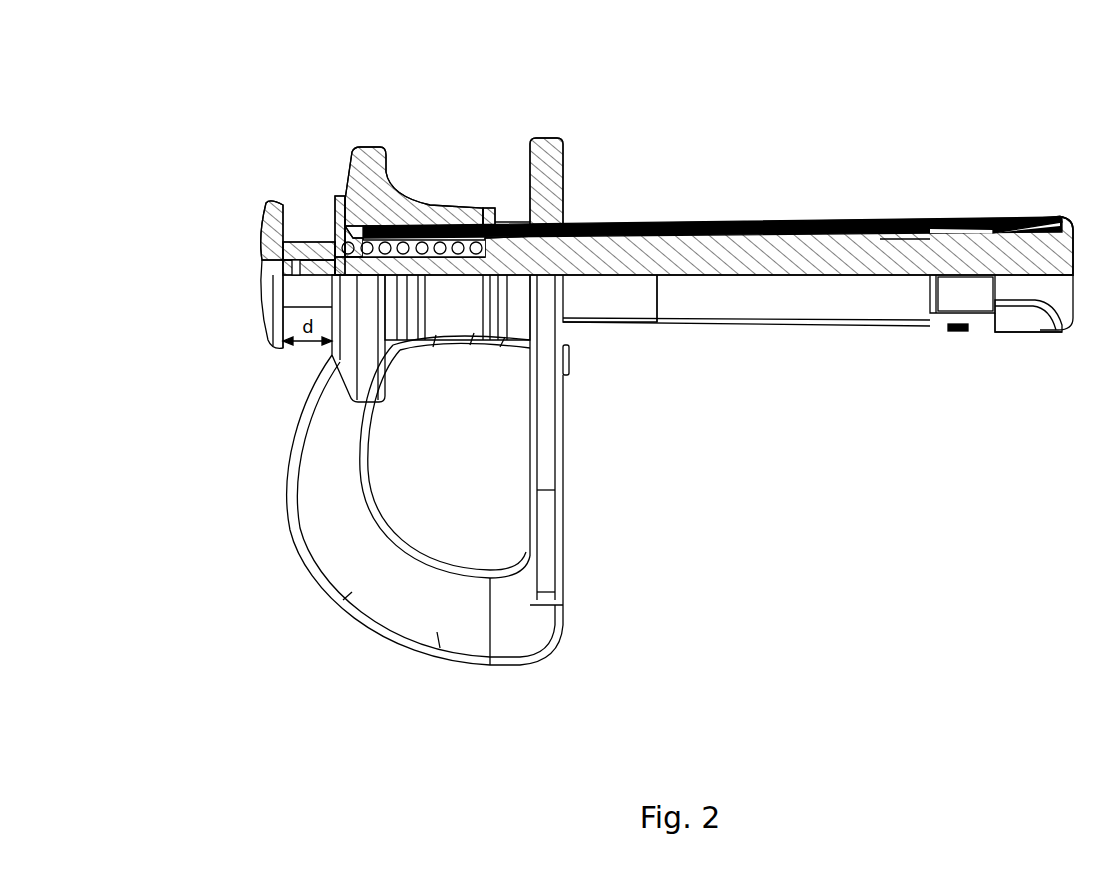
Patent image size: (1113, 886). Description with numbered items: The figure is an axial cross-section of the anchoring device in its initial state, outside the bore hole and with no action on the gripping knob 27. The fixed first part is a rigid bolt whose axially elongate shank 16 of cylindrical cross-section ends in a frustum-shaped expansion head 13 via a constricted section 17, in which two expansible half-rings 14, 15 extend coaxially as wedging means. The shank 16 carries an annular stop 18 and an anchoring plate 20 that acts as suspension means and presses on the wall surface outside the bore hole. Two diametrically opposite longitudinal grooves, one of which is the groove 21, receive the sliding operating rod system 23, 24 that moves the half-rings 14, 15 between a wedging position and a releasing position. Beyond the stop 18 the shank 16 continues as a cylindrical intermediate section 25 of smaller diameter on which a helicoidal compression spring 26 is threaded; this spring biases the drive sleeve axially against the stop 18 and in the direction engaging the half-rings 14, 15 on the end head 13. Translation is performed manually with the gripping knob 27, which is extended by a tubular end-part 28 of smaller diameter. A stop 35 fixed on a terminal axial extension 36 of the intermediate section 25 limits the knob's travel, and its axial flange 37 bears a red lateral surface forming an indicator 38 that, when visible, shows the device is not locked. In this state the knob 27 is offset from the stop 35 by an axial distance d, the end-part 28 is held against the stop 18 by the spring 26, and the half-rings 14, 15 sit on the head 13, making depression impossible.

The frustum-shaped expansion head 13 is at (1045, 250).
The half-ring 14 is at (1012, 222).
The half-ring 15 is at (1032, 323).
The shank 16 is at (706, 252).
The constricted section 17 is at (975, 300).
The annular stop 18 is at (510, 318).
The anchoring plate 20 is at (507, 612).
The longitudinal groove 21 is at (908, 237).
The operating rod 23 is at (797, 232).
The operating rod 24 is at (940, 325).
The cylindrical intermediate section 25 is at (342, 245).
The compression spring 26 is at (440, 240).
The gripping knob 27 is at (364, 175).
The tubular end-part 28 is at (436, 342).
The stop 35 is at (267, 298).
The terminal axial extension 36 is at (307, 268).
The axial flange 37 is at (293, 255).
The indicator 38 is at (310, 240).